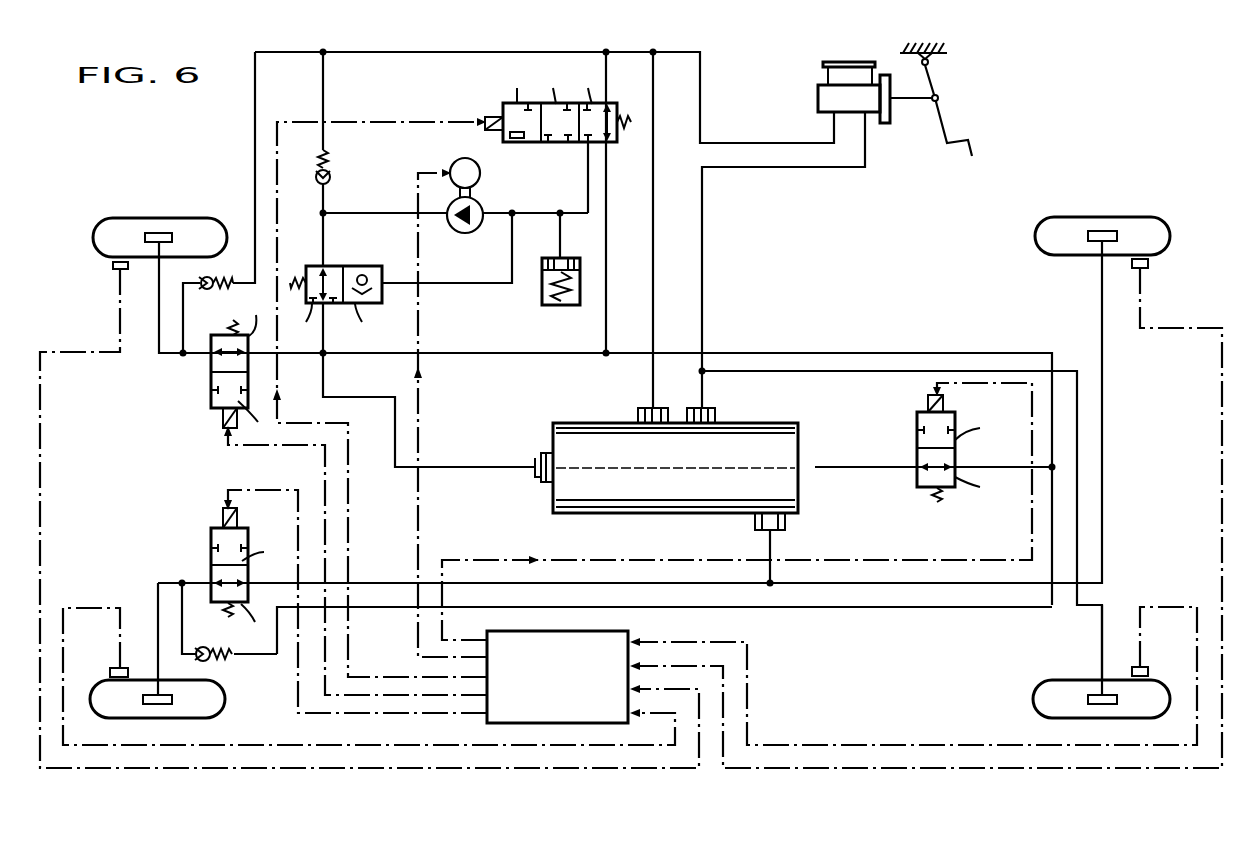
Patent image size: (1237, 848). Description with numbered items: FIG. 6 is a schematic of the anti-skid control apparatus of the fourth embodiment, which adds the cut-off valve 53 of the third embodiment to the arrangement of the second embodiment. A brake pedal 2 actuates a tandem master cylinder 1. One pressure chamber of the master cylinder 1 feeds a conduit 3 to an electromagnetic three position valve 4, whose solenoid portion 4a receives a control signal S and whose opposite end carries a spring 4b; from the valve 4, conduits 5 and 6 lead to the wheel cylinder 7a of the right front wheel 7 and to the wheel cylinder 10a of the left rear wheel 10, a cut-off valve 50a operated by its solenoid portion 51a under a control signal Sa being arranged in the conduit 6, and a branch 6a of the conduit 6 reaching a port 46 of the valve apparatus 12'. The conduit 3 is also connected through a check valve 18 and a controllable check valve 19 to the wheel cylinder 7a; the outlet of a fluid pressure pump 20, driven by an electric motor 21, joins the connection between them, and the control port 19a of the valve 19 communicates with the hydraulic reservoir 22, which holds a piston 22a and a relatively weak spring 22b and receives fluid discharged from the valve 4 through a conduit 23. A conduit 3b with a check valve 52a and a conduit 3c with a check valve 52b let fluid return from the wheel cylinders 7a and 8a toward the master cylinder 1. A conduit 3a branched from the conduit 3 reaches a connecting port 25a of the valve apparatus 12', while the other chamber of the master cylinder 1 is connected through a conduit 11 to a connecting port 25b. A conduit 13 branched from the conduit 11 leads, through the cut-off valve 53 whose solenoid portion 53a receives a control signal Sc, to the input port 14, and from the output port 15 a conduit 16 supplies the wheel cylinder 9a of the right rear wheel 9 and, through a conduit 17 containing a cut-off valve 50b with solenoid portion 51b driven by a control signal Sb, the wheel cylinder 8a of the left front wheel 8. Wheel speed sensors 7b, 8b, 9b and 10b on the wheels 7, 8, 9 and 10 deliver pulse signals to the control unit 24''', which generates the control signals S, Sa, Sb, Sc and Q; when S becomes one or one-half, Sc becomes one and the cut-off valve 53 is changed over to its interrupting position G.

The tandem master cylinder 1 is at (815, 76).
The brake pedal 2 is at (945, 128).
The conduit 3 is at (612, 57).
The conduit 3a is at (655, 205).
The conduit 3b is at (252, 110).
The conduit 3c is at (845, 608).
The electromagnetic three position valve 4 is at (544, 144).
The solenoid portion 4a is at (487, 116).
The return spring 4b is at (628, 130).
The conduit 5 is at (608, 205).
The conduit 6 is at (444, 355).
The conduit branch 6a is at (345, 397).
The right front wheel 7 is at (114, 230).
The wheel cylinder 7a is at (160, 233).
The wheel speed sensor 7b is at (112, 268).
The left front wheel 8 is at (203, 718).
The wheel cylinder 8a is at (172, 698).
The wheel speed sensor 8b is at (110, 668).
The right rear wheel 9 is at (1058, 226).
The wheel cylinder 9a is at (1105, 231).
The wheel speed sensor 9b is at (1148, 268).
The left rear wheel 10 is at (1055, 683).
The wheel cylinder 10a is at (1097, 695).
The wheel speed sensor 10b is at (1147, 667).
The conduit 11 is at (704, 205).
The valve apparatus 12' is at (666, 439).
The conduit 13 is at (792, 372).
The input port 14 is at (818, 466).
The output port 15 is at (773, 536).
The conduit 16 is at (880, 582).
The conduit 17 is at (610, 582).
The check valve 18 is at (331, 167).
The controllable check valve 19 is at (311, 266).
The control port 19a is at (376, 268).
The fluid pressure pump 20 is at (468, 234).
The electric motor 21 is at (449, 165).
The hydraulic reservoir 22 is at (572, 305).
The piston 22a is at (541, 266).
The spring 22b is at (549, 292).
The conduit 23 is at (587, 180).
The control unit 24''' is at (586, 666).
The connecting port 25a is at (650, 405).
The connecting port 25b is at (712, 406).
The port 46 is at (533, 467).
The cut-off valve 50a is at (208, 377).
The cut-off valve 50b is at (208, 546).
The solenoid portion 51a is at (222, 420).
The solenoid portion 51b is at (222, 517).
The check valve 52a is at (234, 277).
The check valve 52b is at (222, 658).
The cut-off valve 53 is at (914, 430).
The solenoid portion 53a is at (925, 402).
The control signal S is at (350, 484).
The control signal Sa is at (245, 445).
The control signal Sb is at (258, 490).
The control signal Sc is at (470, 560).
The control signal Q is at (422, 484).